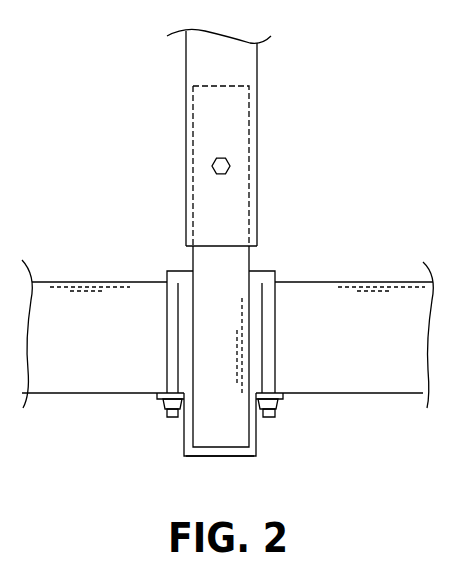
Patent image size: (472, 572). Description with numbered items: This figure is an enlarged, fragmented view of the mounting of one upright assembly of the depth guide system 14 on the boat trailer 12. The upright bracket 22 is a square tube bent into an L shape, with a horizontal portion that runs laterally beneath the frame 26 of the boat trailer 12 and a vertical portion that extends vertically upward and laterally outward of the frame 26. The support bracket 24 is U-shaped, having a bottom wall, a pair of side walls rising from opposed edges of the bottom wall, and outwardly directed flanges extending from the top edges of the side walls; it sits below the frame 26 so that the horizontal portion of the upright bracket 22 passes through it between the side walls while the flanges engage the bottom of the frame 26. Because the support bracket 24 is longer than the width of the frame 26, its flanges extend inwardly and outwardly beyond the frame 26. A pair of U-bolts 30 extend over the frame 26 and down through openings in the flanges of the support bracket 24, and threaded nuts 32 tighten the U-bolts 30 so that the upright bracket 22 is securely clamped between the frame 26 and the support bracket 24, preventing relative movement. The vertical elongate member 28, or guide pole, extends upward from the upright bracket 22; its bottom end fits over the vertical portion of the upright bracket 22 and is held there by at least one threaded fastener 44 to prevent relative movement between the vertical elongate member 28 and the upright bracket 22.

The boat trailer 12 is at (54, 282).
The depth guide system 14 is at (257, 68).
The upright bracket 22 is at (249, 332).
The support bracket 24 is at (225, 457).
The frame 26 is at (382, 395).
The vertical elongate member 28 is at (186, 60).
The U-bolts 30 is at (167, 268).
The threaded nuts 32 is at (163, 405).
The threaded fastener 44 is at (231, 161).